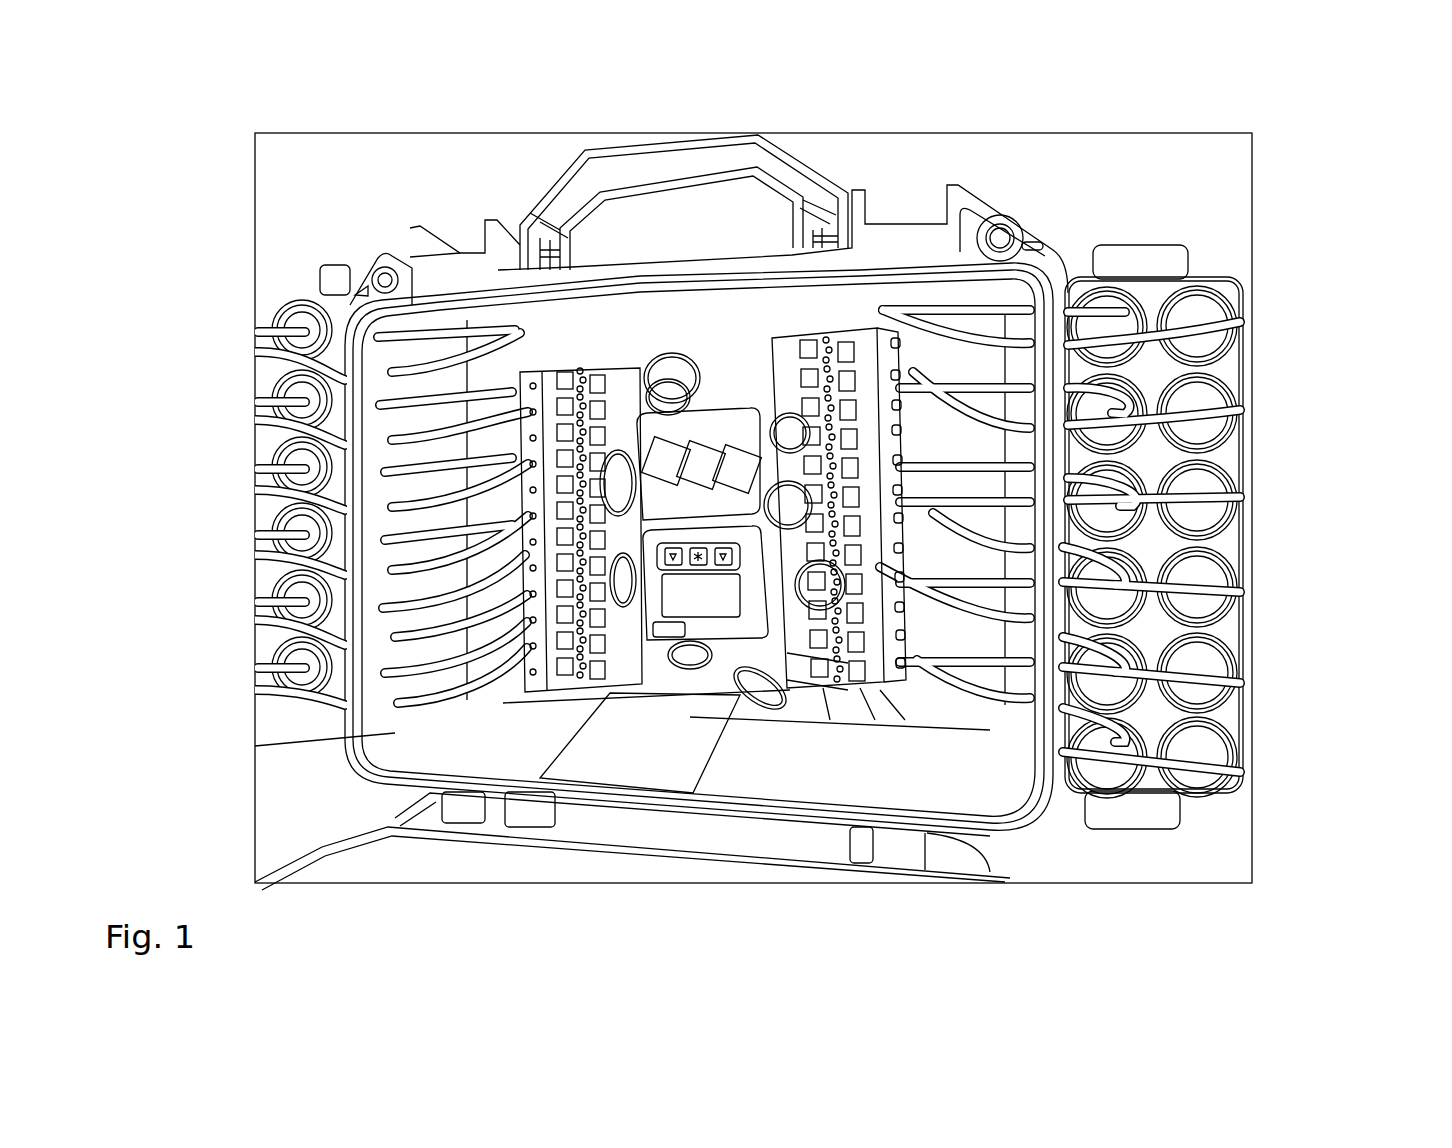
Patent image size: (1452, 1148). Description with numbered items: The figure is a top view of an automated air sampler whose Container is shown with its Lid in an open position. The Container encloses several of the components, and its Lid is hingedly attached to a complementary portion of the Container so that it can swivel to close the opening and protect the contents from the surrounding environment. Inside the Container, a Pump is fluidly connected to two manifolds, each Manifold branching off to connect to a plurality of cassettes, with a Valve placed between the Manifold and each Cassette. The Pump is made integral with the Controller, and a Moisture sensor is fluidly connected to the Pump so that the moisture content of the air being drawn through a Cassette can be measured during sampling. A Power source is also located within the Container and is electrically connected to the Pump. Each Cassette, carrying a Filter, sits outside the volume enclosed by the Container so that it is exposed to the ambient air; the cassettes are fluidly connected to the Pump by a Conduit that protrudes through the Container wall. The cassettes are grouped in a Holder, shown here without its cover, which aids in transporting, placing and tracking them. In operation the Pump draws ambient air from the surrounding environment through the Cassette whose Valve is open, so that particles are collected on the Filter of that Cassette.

The moisture sensor Moisture sensor is at (658, 448).
The controller Controller is at (720, 428).
The power source Power source is at (740, 465).
The conduit Conduit is at (1093, 312).
The filter Filter is at (1205, 312).
The cassette Cassette is at (1245, 340).
The holder Holder is at (1228, 634).
The container wall Container wall is at (385, 530).
The container Container is at (400, 740).
The lid Lid is at (360, 860).
The pump Pump is at (740, 638).
The valve Valve is at (833, 685).
The manifold Manifold is at (887, 673).